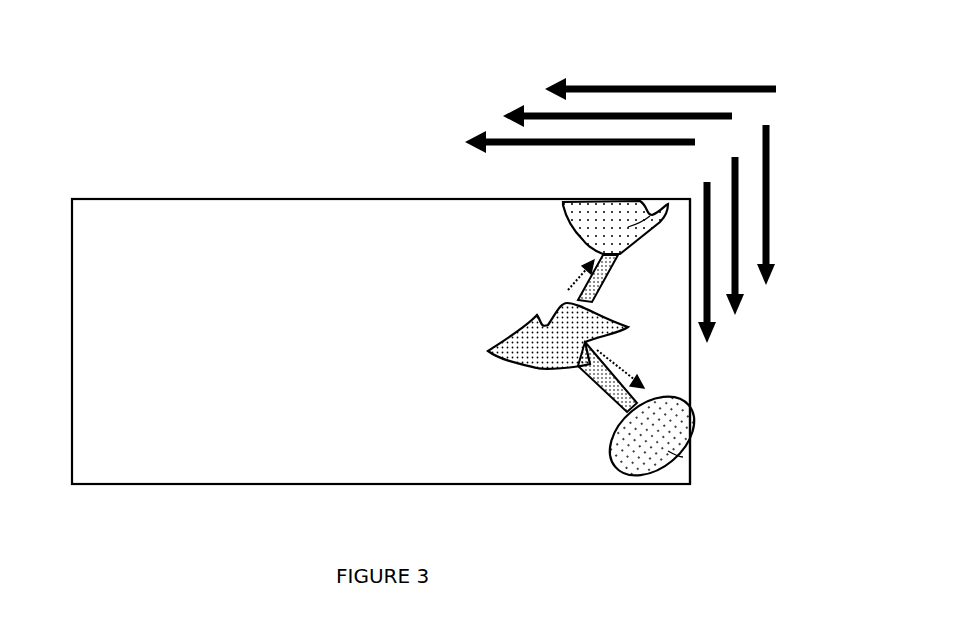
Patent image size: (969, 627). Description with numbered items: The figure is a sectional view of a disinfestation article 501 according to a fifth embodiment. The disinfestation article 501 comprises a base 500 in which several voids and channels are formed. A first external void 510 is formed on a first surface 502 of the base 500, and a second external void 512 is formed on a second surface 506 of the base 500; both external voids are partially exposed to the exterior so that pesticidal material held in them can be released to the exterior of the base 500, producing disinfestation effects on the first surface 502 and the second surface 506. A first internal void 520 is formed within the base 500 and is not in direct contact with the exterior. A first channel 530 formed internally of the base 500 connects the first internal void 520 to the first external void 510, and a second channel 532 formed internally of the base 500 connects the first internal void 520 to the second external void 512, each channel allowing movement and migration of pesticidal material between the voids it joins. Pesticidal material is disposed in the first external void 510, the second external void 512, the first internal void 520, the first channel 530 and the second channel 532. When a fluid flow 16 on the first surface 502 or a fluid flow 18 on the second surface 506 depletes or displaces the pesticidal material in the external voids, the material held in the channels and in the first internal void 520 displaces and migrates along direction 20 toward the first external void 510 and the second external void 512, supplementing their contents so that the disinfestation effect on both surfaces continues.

The fluid flow 16 is at (620, 88).
The fluid flow 18 is at (770, 237).
The direction 20 is at (565, 292).
The base 500 is at (202, 220).
The disinfestation article 501 is at (133, 145).
The first surface 502 is at (310, 198).
The second surface 506 is at (690, 382).
The first external void 510 is at (640, 210).
The second external void 512 is at (690, 457).
The first internal void 520 is at (505, 358).
The first channel 530 is at (583, 270).
The second channel 532 is at (617, 403).